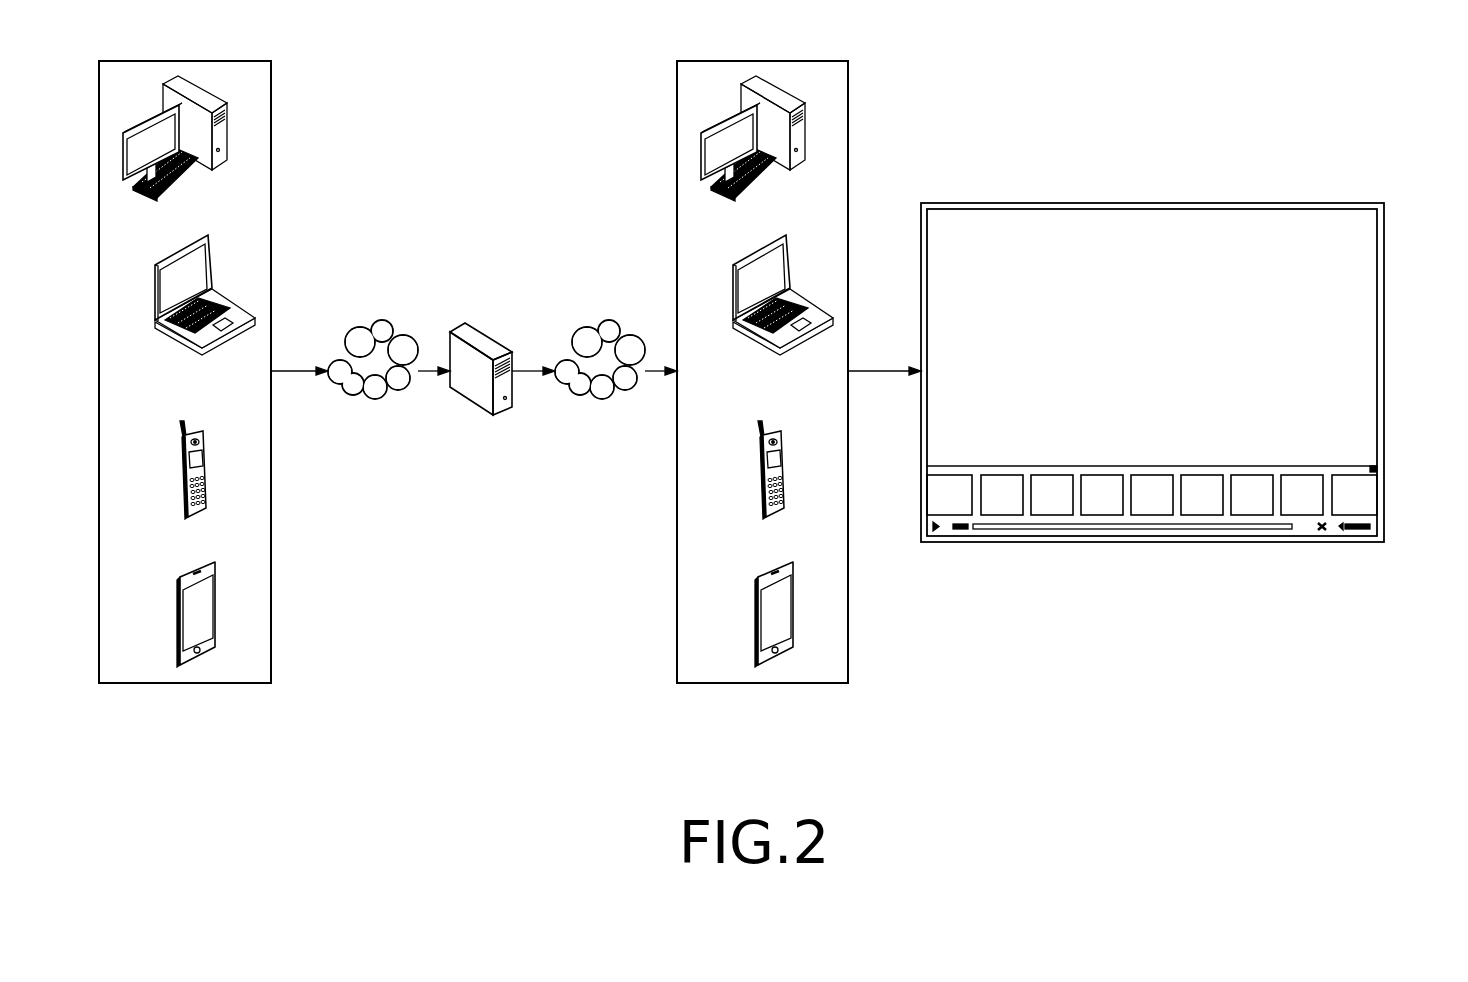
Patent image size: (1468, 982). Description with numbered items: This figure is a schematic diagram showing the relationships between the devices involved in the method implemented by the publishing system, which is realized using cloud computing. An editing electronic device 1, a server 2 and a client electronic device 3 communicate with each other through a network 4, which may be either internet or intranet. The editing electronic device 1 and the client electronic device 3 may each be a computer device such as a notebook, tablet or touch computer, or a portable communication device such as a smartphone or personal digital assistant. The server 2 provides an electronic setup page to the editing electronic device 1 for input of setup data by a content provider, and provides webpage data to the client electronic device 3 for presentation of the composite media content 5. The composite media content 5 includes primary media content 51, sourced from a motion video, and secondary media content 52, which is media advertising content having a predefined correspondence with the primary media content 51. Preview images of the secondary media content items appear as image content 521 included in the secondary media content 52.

The editing electronic device 1 is at (185, 683).
The server 2 is at (471, 411).
The client electronic device 3 is at (761, 683).
The network 4 is at (375, 409).
The composite media content 5 is at (1188, 352).
The primary media content 51 is at (1384, 287).
The secondary media content 52 is at (1191, 535).
The image content 521 is at (1108, 505).